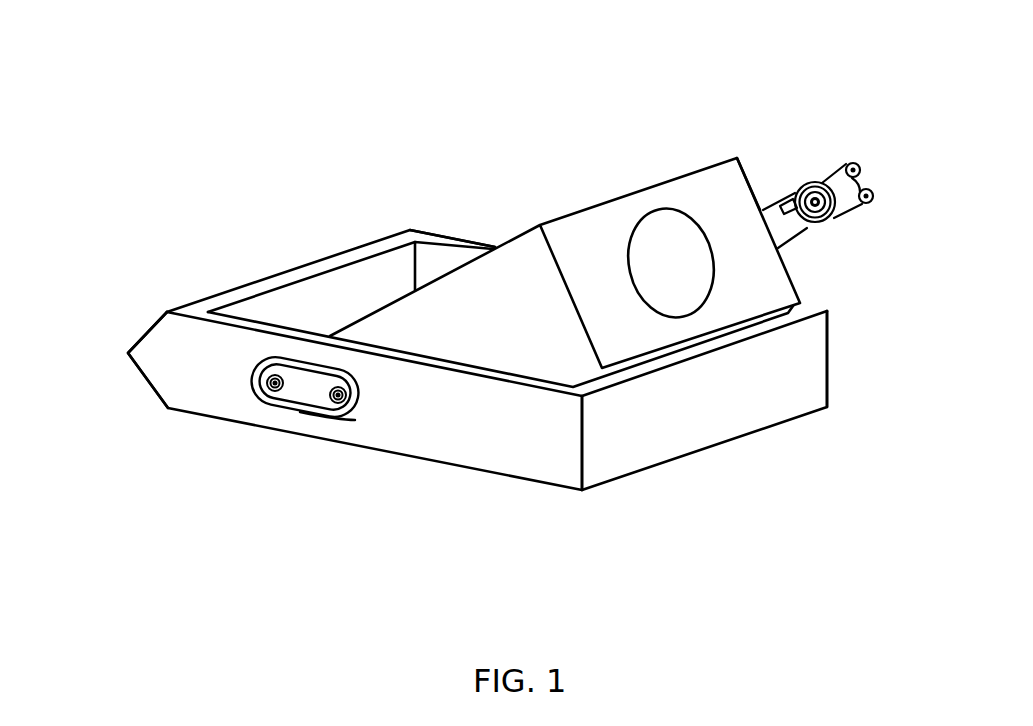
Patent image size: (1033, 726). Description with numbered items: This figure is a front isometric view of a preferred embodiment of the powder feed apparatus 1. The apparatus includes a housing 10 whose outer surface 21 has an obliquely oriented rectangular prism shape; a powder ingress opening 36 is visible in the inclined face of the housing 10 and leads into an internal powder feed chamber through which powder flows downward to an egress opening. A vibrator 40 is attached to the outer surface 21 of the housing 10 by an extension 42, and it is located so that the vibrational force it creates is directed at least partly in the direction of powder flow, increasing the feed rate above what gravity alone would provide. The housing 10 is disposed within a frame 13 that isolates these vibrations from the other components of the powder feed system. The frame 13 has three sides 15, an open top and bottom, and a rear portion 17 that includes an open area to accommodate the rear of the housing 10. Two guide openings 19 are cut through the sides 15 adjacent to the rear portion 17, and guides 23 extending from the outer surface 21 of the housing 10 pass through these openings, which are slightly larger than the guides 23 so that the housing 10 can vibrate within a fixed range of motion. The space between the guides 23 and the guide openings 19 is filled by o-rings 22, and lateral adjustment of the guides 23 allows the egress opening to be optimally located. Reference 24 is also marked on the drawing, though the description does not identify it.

The powder feed apparatus 1 is at (437, 99).
The housing 10 is at (753, 176).
The frame 13 is at (617, 451).
The sides 15 is at (467, 240).
The rear portion 17 is at (148, 333).
The guide openings 19 is at (355, 421).
The outer surface 21 is at (622, 330).
The o-rings 22 is at (257, 397).
The guides 23 is at (302, 397).
The screw 24 is at (332, 407).
The powder ingress opening 36 is at (688, 295).
The vibrator 40 is at (815, 172).
The extension 42 is at (790, 228).